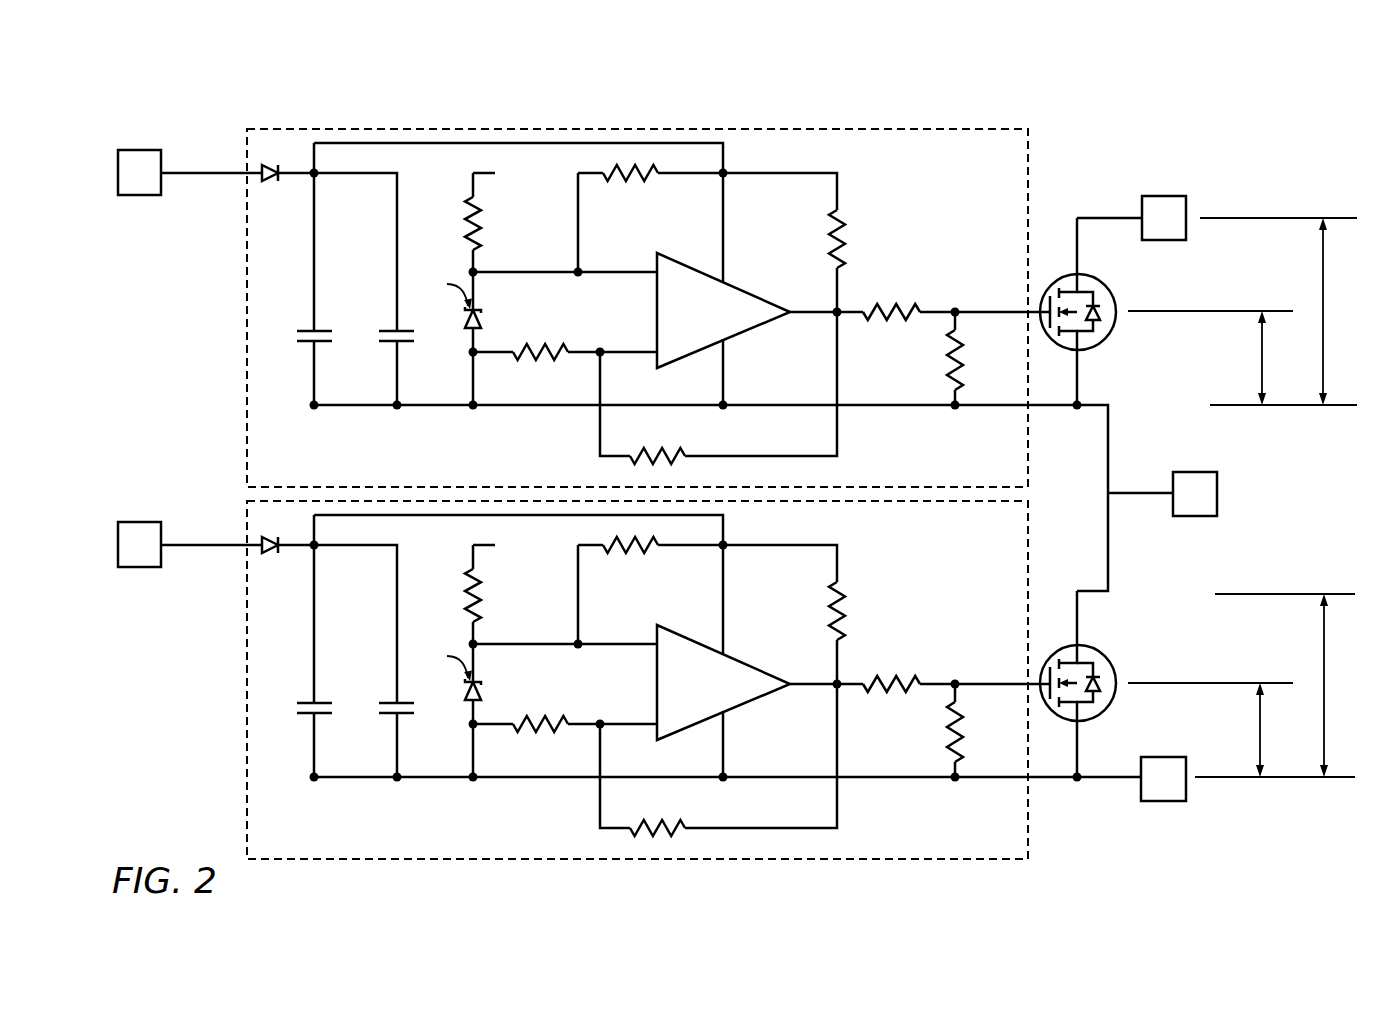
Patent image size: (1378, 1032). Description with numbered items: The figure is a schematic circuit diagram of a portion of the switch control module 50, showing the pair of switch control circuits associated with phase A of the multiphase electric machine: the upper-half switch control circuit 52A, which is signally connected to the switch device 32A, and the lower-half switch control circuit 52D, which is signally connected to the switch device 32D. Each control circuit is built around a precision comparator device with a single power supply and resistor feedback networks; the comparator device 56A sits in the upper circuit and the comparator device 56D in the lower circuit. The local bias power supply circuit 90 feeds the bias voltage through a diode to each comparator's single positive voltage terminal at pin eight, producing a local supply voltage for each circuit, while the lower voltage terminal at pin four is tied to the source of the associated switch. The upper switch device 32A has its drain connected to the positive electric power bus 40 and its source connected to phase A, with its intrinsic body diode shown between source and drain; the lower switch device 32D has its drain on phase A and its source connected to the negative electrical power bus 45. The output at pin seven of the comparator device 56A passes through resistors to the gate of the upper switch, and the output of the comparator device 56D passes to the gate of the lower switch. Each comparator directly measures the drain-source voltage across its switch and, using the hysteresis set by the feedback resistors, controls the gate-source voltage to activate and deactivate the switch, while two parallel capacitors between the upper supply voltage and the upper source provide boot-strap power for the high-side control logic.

The switch control module 50 is at (241, 122).
The upper-half switch control circuit 52A is at (320, 128).
The lower-half switch control circuit 52D is at (247, 618).
The comparator device 56A is at (715, 311).
The comparator device 56D is at (715, 683).
The switch device 32A is at (1104, 348).
The switch device 32D is at (1099, 646).
The local bias power supply circuit 90 is at (139, 358).
The positive electric power bus 40 is at (1131, 218).
The negative electrical power bus 45 is at (1131, 778).